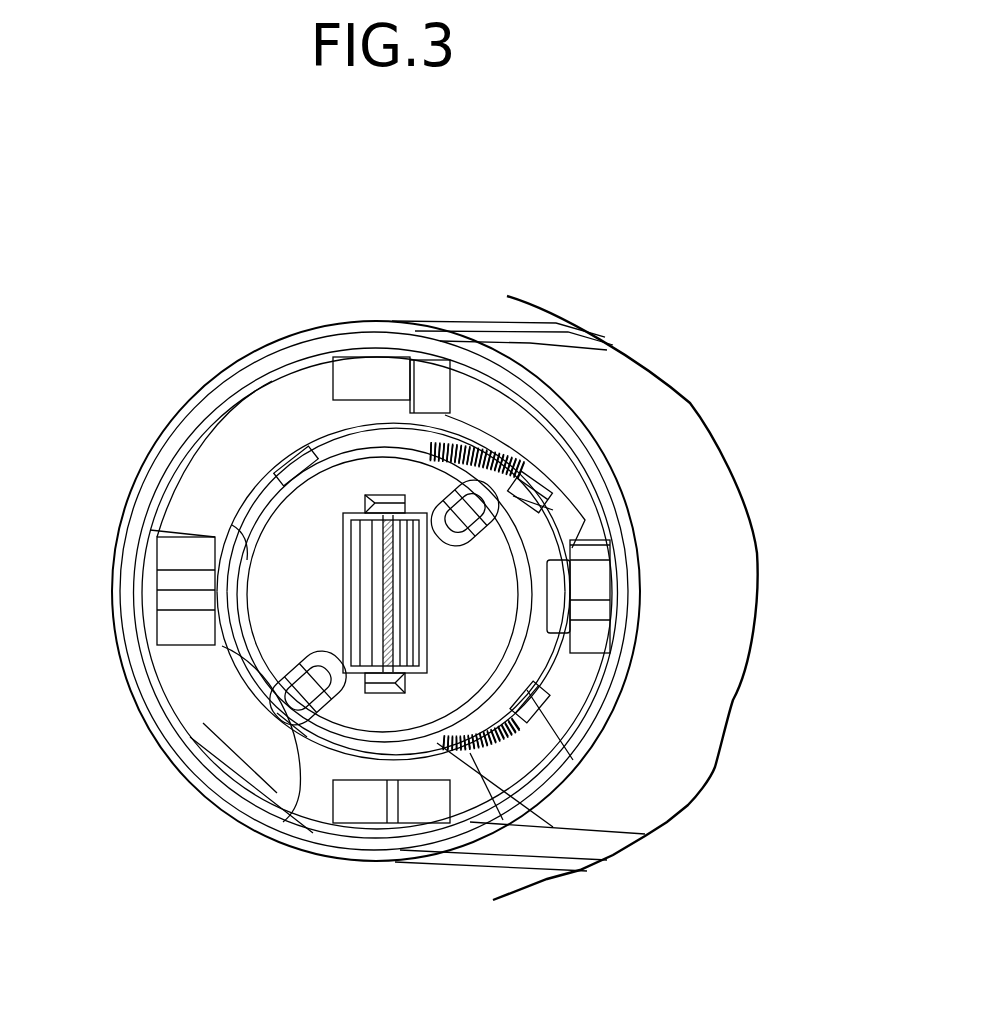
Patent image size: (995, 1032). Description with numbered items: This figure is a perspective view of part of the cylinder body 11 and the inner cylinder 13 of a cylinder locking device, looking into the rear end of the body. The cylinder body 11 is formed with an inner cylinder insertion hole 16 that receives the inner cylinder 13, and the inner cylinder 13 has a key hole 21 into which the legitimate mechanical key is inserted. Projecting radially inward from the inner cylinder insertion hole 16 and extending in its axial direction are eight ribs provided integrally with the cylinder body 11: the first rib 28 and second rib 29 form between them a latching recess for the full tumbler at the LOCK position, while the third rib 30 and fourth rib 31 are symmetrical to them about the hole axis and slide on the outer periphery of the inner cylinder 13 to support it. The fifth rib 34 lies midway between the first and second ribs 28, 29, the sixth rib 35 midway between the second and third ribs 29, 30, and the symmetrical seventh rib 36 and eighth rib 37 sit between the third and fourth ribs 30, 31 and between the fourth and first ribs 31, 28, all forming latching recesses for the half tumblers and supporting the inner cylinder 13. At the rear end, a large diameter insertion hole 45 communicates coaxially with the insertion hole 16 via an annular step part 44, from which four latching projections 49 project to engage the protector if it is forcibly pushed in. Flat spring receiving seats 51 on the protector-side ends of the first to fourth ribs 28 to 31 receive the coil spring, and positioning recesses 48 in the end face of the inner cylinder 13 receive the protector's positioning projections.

The cylinder body 11 is at (497, 330).
The inner cylinder 13 is at (490, 647).
The inner cylinder insertion hole 16 is at (262, 700).
The key hole 21 is at (395, 600).
The first rib 28 is at (470, 753).
The second rib 29 is at (247, 553).
The third rib 30 is at (473, 440).
The fourth rib 31 is at (577, 668).
The fifth rib 34 is at (283, 800).
The sixth rib 35 is at (307, 455).
The seventh rib 36 is at (547, 470).
The eighth rib 37 is at (513, 712).
The annular step part 44 is at (178, 517).
The large diameter insertion hole 45 is at (228, 406).
The positioning recess 48 is at (500, 537).
The latching projection 49 is at (372, 372).
The spring receiving seat 51 is at (449, 392).